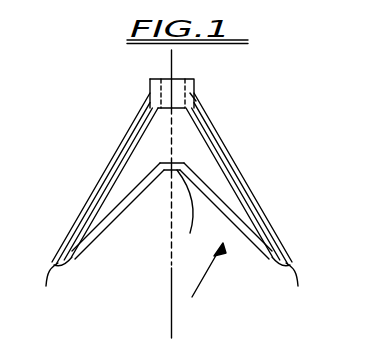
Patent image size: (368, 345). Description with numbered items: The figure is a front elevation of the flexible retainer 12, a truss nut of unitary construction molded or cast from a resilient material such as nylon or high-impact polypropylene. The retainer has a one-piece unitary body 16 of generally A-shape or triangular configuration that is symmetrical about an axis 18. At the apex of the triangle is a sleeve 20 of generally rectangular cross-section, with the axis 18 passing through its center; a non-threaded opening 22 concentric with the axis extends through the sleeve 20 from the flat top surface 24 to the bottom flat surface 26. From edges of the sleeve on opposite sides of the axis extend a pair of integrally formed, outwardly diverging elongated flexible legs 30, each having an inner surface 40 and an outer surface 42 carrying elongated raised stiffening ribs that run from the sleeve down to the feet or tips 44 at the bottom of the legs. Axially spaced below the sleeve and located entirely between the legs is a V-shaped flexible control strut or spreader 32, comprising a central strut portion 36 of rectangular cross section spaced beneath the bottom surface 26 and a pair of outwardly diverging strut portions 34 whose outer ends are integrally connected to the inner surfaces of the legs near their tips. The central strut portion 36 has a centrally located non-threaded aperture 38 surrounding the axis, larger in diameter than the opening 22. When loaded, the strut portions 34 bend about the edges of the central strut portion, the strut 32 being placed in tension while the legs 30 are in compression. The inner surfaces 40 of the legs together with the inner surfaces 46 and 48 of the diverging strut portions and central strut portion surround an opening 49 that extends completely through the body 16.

The flexible retainer 12 is at (203, 286).
The one-piece unitary body 16 is at (195, 95).
The axis 18 is at (171, 298).
The sleeve 20 is at (150, 91).
The non-threaded opening 22 is at (175, 89).
The flat top surface 24 is at (158, 81).
The bottom flat surface 26 is at (177, 105).
The flexible legs 30 is at (80, 227).
The flexible control strut 32 is at (186, 220).
The outwardly diverging strut portions 34 is at (107, 223).
The central strut portion 36 is at (164, 164).
The non-threaded aperture 38 is at (170, 203).
The inner surface 40 is at (122, 190).
The outer surface 42 is at (90, 202).
The feet or tips 44 is at (175, 294).
The inner surfaces 46 is at (228, 204).
The inner surface 48 is at (172, 150).
The opening 49 is at (194, 152).